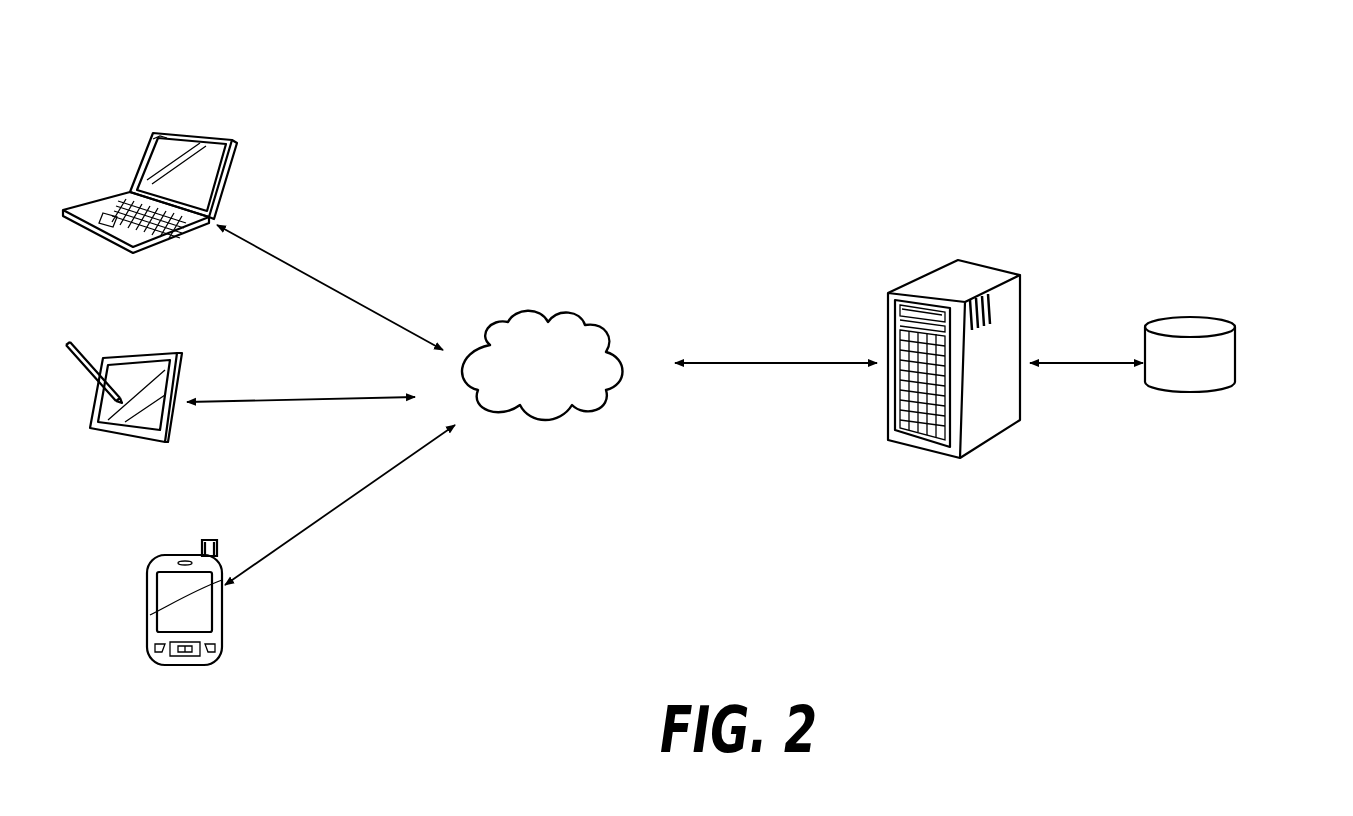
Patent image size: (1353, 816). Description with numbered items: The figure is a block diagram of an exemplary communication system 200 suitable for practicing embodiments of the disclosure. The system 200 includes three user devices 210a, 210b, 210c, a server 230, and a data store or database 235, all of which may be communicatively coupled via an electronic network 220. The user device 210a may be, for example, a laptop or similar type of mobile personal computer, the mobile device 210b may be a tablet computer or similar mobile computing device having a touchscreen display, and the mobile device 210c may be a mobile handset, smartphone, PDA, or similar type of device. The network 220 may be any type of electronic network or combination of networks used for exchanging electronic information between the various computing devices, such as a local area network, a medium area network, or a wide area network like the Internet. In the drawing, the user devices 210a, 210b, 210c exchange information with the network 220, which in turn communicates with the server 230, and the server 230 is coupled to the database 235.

The communication system 200 is at (1245, 133).
The user device 210a is at (232, 138).
The mobile device 210b is at (180, 355).
The mobile device 210c is at (220, 617).
The electronic network 220 is at (586, 333).
The server 230 is at (1017, 287).
The database 235 is at (1230, 348).